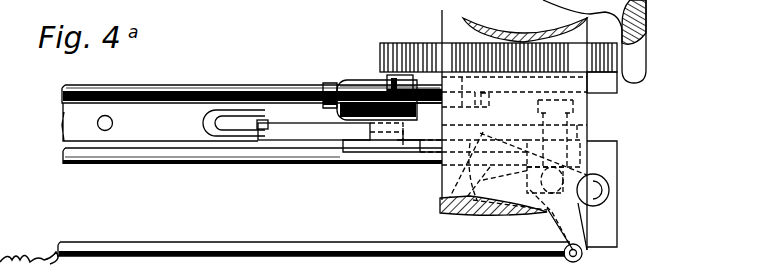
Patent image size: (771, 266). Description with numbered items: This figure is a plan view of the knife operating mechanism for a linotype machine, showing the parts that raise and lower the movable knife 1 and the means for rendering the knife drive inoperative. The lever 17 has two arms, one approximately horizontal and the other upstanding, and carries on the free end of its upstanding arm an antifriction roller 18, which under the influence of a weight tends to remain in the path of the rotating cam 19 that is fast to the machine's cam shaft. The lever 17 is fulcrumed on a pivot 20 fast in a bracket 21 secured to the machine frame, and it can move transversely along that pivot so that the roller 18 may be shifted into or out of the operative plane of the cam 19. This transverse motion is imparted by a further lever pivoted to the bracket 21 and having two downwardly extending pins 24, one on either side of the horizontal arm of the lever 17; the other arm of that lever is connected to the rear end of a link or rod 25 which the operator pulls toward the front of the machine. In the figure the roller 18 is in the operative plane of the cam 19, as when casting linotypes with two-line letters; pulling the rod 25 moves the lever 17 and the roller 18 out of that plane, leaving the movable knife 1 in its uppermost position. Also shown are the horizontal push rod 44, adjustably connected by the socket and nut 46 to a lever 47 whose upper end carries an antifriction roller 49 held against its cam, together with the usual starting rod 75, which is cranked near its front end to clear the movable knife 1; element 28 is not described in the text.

The movable knife 1 is at (165, 158).
The lever 17 is at (362, 148).
The antifriction roller 18 is at (403, 142).
The rotating cam 19 is at (282, 128).
The pivot 20 is at (457, 5).
The bracket 21 is at (593, 183).
The pins 24 is at (465, 207).
The link or rod 25 is at (190, 243).
The lever 28 is at (560, 238).
The horizontal push rod 44 is at (161, 90).
The socket and nut 46 is at (360, 84).
The lever 47 is at (598, 97).
The antifriction roller 49 is at (386, 76).
The starting rod 75 is at (165, 122).